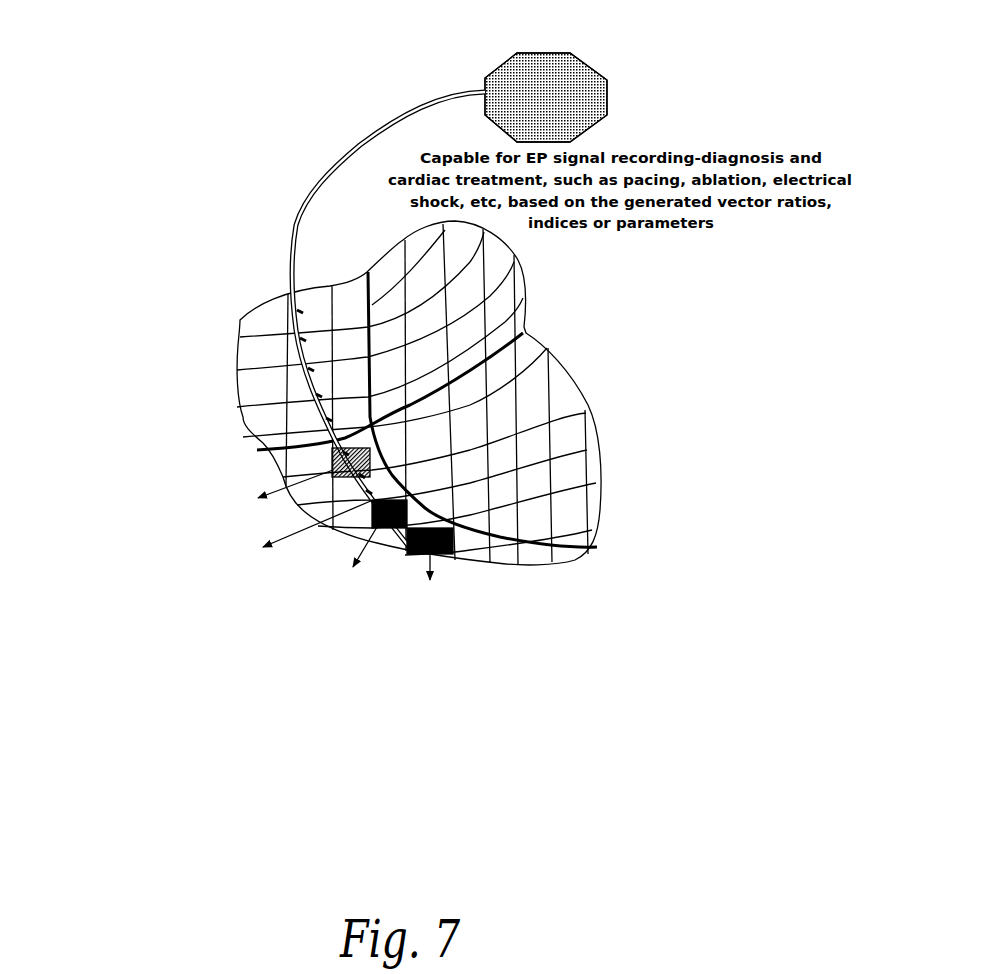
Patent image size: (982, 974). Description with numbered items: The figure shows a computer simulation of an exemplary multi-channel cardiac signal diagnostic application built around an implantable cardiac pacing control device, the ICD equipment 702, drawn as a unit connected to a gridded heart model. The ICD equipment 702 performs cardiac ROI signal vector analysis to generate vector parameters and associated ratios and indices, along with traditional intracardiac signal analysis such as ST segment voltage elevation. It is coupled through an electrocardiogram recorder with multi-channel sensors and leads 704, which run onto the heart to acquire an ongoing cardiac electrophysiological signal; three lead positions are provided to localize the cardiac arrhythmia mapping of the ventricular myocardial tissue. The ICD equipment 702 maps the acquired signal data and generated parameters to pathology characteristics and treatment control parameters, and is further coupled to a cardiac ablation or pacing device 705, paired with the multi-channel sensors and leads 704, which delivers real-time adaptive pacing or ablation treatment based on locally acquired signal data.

The ICD equipment 702 is at (567, 63).
The multi-channel sensors and leads 704 is at (137, 535).
The cardiac ablation or pacing device 705 is at (175, 610).